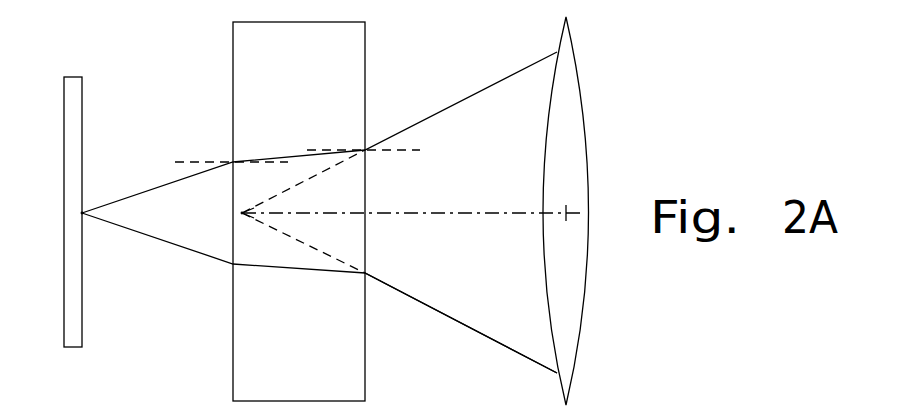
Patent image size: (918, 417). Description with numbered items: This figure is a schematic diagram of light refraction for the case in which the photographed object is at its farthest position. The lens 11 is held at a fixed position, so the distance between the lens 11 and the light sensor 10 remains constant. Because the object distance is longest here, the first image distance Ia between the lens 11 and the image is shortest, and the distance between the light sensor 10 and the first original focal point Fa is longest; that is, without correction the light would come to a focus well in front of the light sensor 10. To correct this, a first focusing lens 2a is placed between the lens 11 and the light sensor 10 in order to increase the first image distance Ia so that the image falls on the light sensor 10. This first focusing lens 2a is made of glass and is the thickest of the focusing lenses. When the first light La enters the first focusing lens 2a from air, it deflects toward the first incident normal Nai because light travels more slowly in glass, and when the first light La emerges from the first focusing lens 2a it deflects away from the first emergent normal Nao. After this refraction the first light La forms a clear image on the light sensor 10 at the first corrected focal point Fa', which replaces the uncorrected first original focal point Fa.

The light sensor 10 is at (75, 82).
The first focusing lens 2a is at (343, 47).
The lens 11 is at (568, 85).
The first image distance Ia is at (443, 215).
The first emergent normal Nao is at (184, 162).
The first incident normal Nai is at (397, 148).
The first original focal point Fa is at (213, 291).
The first corrected focal point Fa' is at (121, 257).
The first light La is at (472, 328).